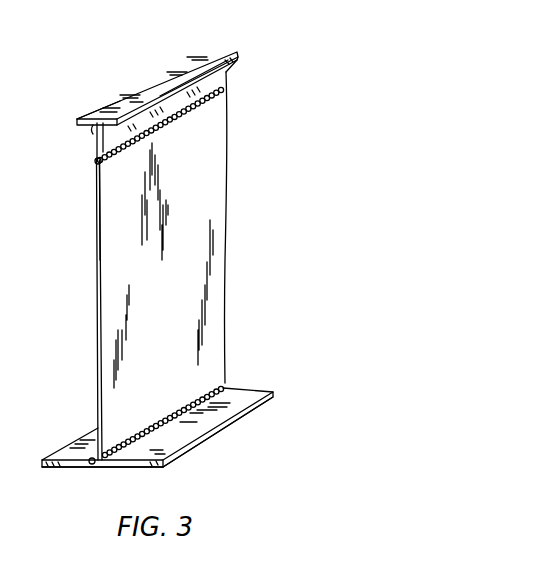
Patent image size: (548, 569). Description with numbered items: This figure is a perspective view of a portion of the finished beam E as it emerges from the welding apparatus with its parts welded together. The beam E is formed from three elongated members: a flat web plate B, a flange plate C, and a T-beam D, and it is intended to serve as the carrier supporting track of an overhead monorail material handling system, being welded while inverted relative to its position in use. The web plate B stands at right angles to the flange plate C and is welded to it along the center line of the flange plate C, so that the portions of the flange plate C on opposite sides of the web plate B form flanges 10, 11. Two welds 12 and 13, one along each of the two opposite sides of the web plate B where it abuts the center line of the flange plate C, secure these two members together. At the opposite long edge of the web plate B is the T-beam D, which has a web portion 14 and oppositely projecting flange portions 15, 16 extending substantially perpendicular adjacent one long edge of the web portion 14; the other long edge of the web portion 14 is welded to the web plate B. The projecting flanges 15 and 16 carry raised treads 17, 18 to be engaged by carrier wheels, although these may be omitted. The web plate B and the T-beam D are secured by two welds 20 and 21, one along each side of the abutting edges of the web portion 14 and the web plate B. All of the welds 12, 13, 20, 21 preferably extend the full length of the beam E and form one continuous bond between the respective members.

The T-beam D is at (145, 85).
The flange portion 16 is at (165, 96).
The flange portion 15 is at (97, 111).
The raised tread 17 is at (91, 129).
The web portion 14 is at (96, 146).
The raised tread 18 is at (116, 137).
The weld 20 is at (95, 161).
The web plate B is at (95, 270).
The weld 21 is at (103, 165).
The beam E is at (69, 226).
The flange plate C is at (70, 446).
The flange 10 is at (66, 467).
The flange 11 is at (140, 467).
The weld 12 is at (87, 464).
The weld 13 is at (118, 465).